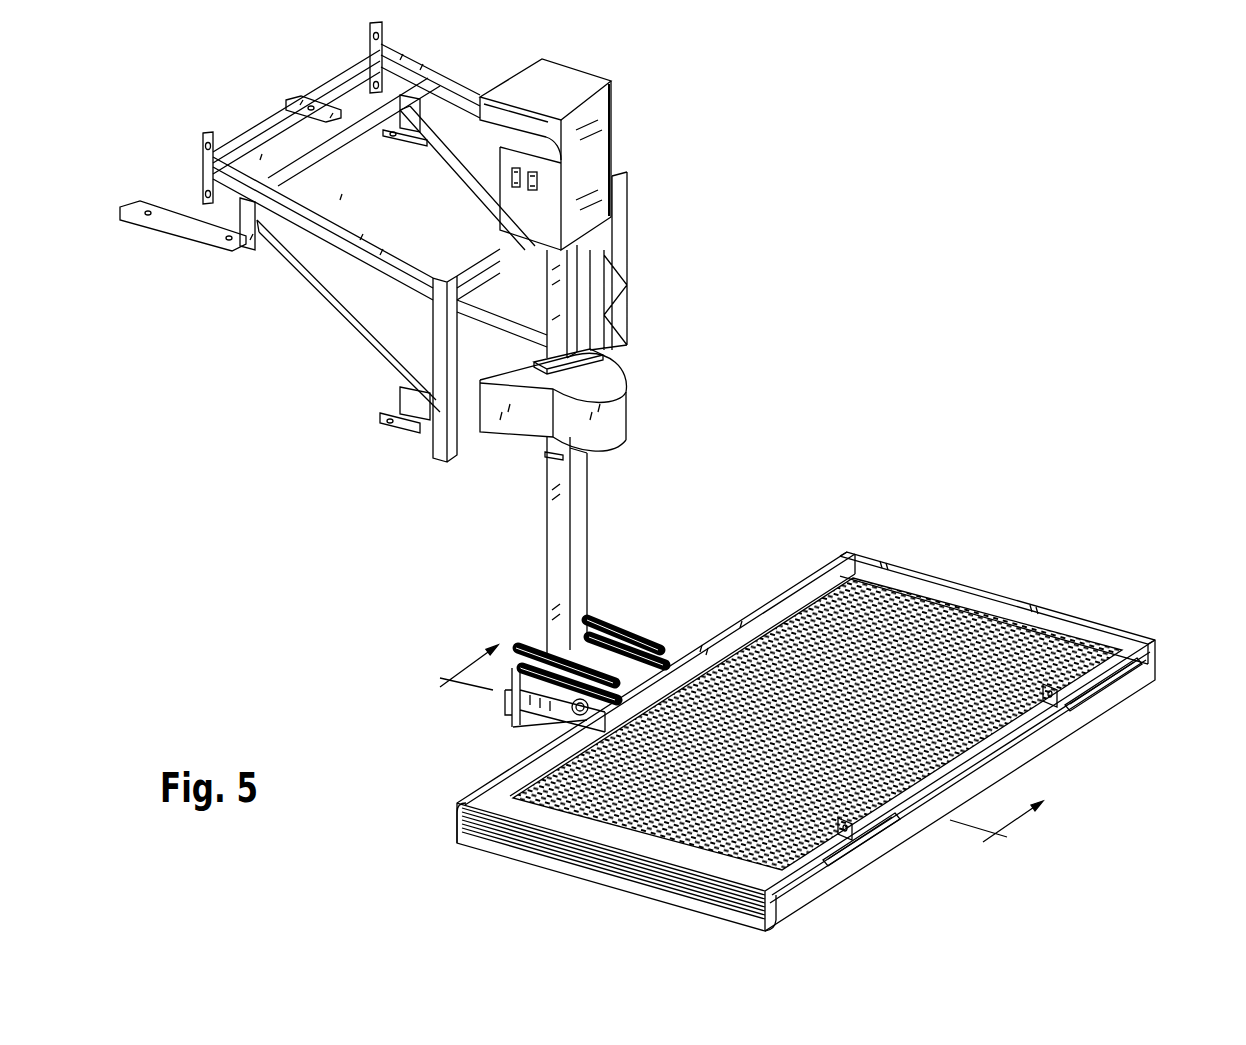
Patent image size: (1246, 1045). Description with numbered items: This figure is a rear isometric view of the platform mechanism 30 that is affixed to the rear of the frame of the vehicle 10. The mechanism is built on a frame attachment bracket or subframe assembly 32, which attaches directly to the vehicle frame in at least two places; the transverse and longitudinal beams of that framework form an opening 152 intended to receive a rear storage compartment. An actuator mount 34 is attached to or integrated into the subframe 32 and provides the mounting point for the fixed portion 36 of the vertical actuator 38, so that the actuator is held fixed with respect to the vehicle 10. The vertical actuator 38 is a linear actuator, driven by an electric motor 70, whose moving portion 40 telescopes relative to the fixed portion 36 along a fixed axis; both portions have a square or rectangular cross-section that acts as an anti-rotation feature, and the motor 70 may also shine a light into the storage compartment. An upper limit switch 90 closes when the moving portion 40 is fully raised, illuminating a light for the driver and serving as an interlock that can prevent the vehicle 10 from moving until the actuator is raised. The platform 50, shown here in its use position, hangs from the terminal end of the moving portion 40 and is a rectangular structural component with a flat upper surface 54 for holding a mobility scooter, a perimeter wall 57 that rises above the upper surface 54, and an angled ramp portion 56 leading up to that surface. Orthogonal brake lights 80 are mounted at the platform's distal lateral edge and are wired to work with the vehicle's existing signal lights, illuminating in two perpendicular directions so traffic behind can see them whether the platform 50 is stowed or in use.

The platform mechanism 30 is at (702, 80).
The opening 152 is at (353, 166).
The subframe assembly 32 is at (325, 316).
The electric motor 70 is at (556, 80).
The vertical actuator 38 is at (626, 146).
The fixed portion 36 is at (582, 280).
The actuator mount 34 is at (617, 394).
The upper limit switch 90 is at (545, 457).
The moving portion 40 is at (558, 523).
The vehicle 10 is at (753, 726).
The platform 50 is at (986, 565).
The perimeter wall 57 is at (745, 633).
The upper surface 54 is at (1010, 627).
The ramp portion 56 is at (600, 858).
The orthogonal brake light 80 is at (1120, 690).